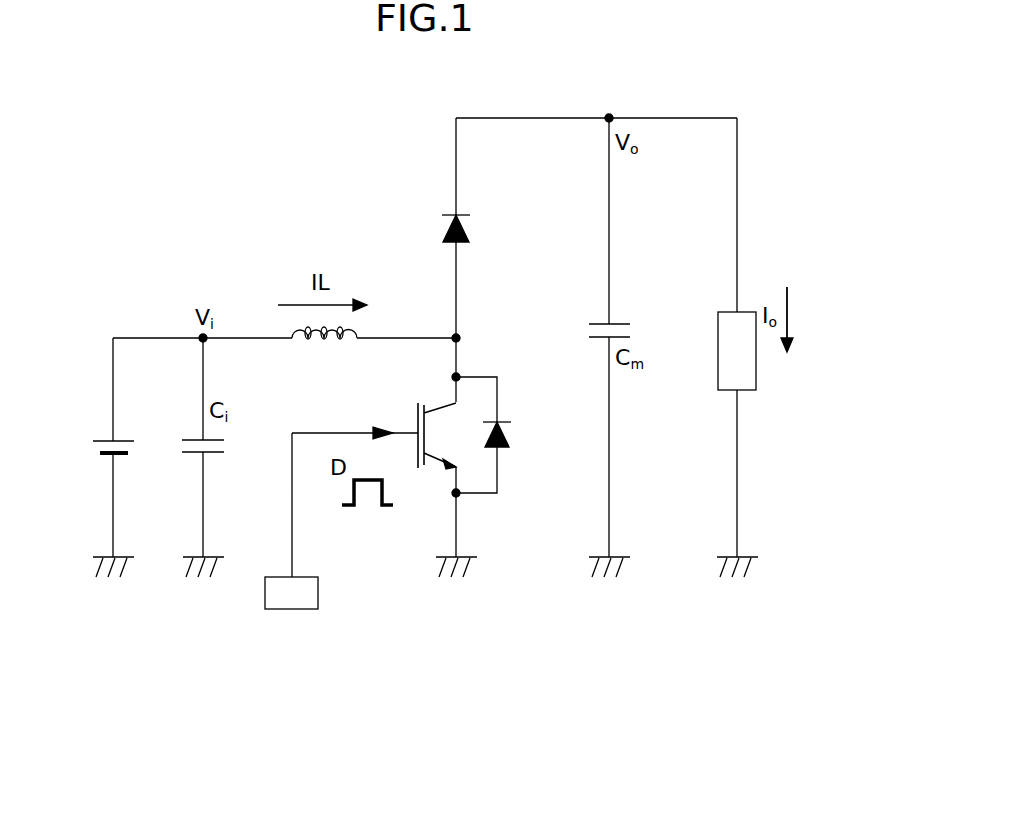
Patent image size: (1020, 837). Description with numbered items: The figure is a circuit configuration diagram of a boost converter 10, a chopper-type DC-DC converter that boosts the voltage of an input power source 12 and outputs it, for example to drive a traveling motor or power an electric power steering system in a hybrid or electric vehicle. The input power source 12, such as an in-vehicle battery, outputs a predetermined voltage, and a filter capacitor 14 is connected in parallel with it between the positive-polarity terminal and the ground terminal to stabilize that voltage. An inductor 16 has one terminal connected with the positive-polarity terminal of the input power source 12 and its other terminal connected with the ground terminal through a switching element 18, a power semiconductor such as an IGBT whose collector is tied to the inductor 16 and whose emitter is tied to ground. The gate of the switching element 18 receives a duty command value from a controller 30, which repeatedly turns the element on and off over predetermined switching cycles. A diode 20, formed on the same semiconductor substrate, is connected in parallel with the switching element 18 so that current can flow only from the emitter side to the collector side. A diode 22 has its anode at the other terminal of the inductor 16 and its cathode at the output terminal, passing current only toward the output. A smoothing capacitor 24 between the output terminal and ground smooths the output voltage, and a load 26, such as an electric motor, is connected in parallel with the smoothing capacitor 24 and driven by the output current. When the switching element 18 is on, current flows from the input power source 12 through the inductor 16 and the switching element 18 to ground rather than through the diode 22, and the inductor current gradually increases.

The boost converter 10 is at (392, 165).
The input power source 12 is at (100, 440).
The filter capacitor 14 is at (215, 453).
The inductor 16 is at (318, 345).
The switching element 18 is at (436, 458).
The diode 20 is at (504, 447).
The diode 22 is at (470, 215).
The smoothing capacitor 24 is at (624, 323).
The load 26 is at (755, 368).
The controller 30 is at (318, 594).